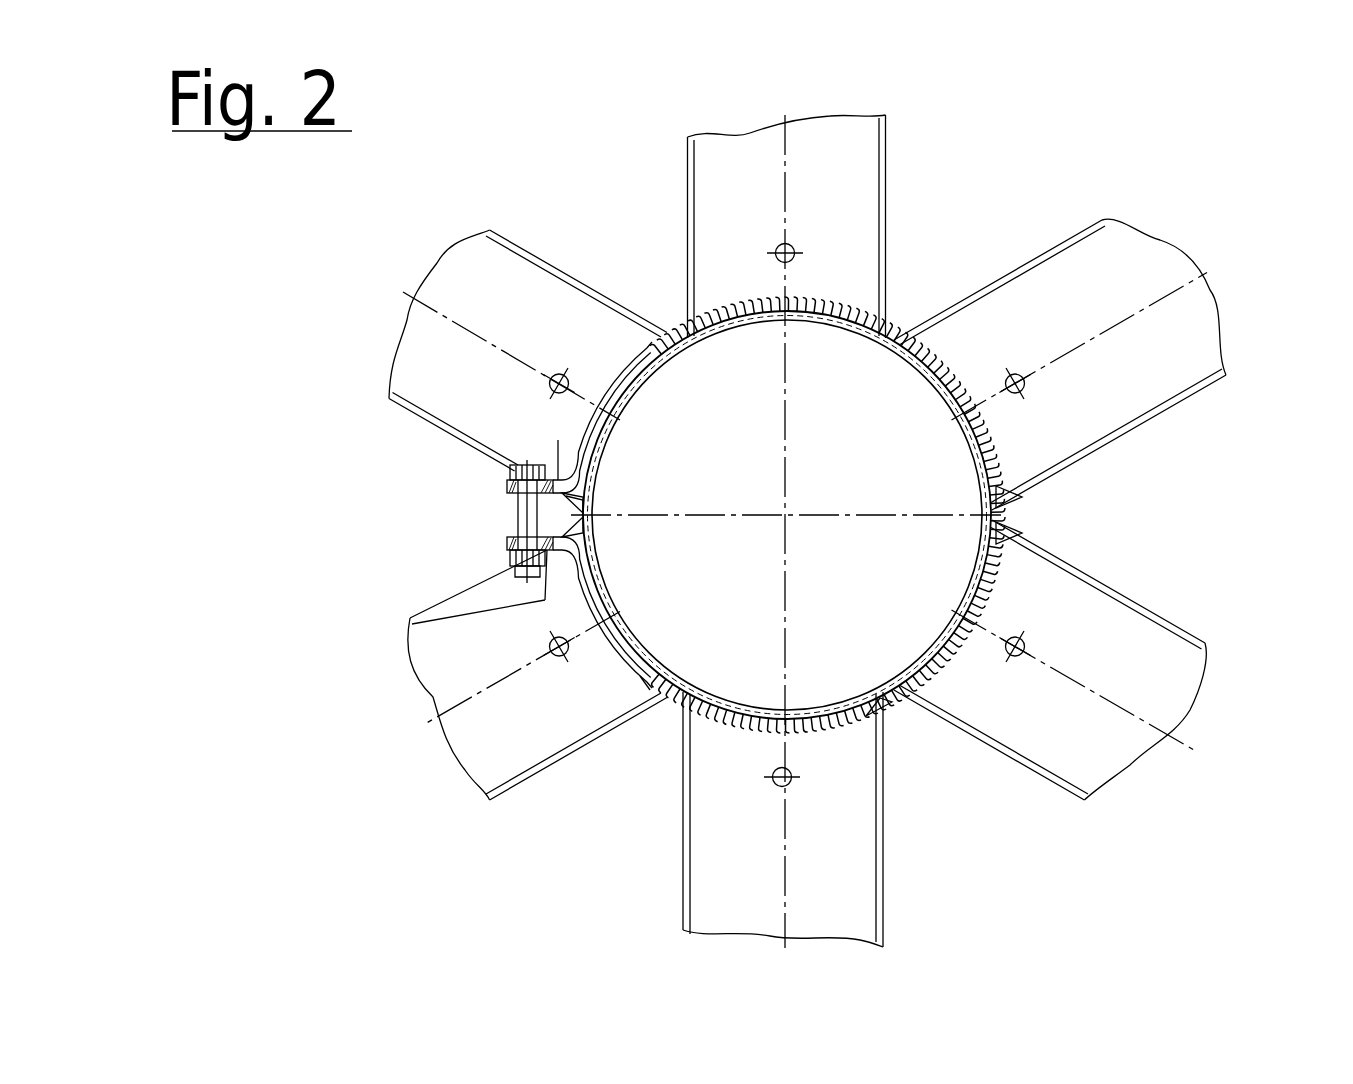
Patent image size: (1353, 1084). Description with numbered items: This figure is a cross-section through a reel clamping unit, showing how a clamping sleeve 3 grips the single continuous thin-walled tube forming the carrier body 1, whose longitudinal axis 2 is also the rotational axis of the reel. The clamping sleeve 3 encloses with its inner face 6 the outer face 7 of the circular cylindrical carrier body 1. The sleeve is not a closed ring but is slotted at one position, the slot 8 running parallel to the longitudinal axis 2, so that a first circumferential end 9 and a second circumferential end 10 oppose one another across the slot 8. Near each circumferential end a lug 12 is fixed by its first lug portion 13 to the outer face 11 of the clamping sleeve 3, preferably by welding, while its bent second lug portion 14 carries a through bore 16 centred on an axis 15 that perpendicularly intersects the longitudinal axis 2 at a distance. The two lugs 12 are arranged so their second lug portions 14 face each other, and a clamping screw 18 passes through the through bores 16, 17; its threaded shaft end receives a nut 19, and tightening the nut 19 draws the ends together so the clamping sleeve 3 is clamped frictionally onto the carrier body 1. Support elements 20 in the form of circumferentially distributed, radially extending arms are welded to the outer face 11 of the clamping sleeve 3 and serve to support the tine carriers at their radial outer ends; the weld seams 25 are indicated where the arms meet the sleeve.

The carrier body 1 is at (787, 515).
The longitudinal axis 2 is at (787, 515).
The clamping sleeve 3 is at (680, 325).
The inner face 6 is at (787, 515).
The outer face 7 is at (851, 411).
The slot 8 is at (587, 510).
The first circumferential end 9 is at (587, 504).
The second circumferential end 10 is at (587, 526).
The outer face 11 is at (677, 697).
The lug 12 is at (585, 612).
The first lug portion 13 is at (628, 660).
The second lug portion 14 is at (620, 658).
The axis 15 is at (510, 518).
The through bore 16 is at (507, 487).
The through bore 17 is at (507, 545).
The clamping screw 18 is at (512, 467).
The nut 19 is at (510, 563).
The support elements 20 is at (807, 531).
The weld seam 25 is at (997, 548).